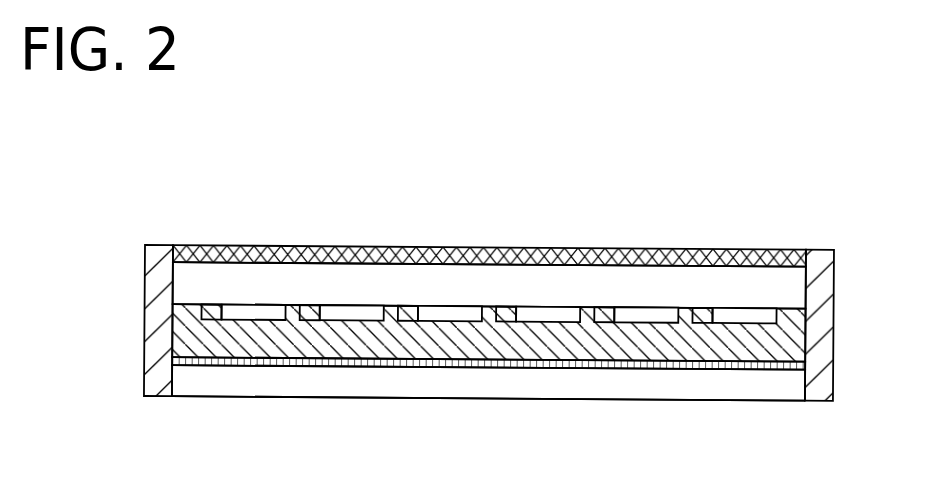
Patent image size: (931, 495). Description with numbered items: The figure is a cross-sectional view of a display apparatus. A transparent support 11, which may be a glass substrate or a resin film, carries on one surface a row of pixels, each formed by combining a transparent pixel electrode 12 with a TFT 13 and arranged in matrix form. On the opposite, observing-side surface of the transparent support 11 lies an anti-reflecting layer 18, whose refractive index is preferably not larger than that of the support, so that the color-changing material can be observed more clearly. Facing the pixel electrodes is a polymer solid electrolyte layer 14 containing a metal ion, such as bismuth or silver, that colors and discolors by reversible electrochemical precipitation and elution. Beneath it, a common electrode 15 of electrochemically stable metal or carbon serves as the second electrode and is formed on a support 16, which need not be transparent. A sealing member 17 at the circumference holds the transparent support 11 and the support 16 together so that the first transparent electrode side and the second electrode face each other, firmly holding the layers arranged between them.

The transparent support 11 is at (414, 274).
The transparent pixel electrode 12 is at (240, 312).
The TFT 13 is at (310, 312).
The polymer solid electrolyte layer 14 is at (683, 345).
The common electrode 15 is at (575, 363).
The support 16 is at (515, 385).
The sealing member 17 is at (817, 305).
The anti-reflecting layer 18 is at (268, 245).